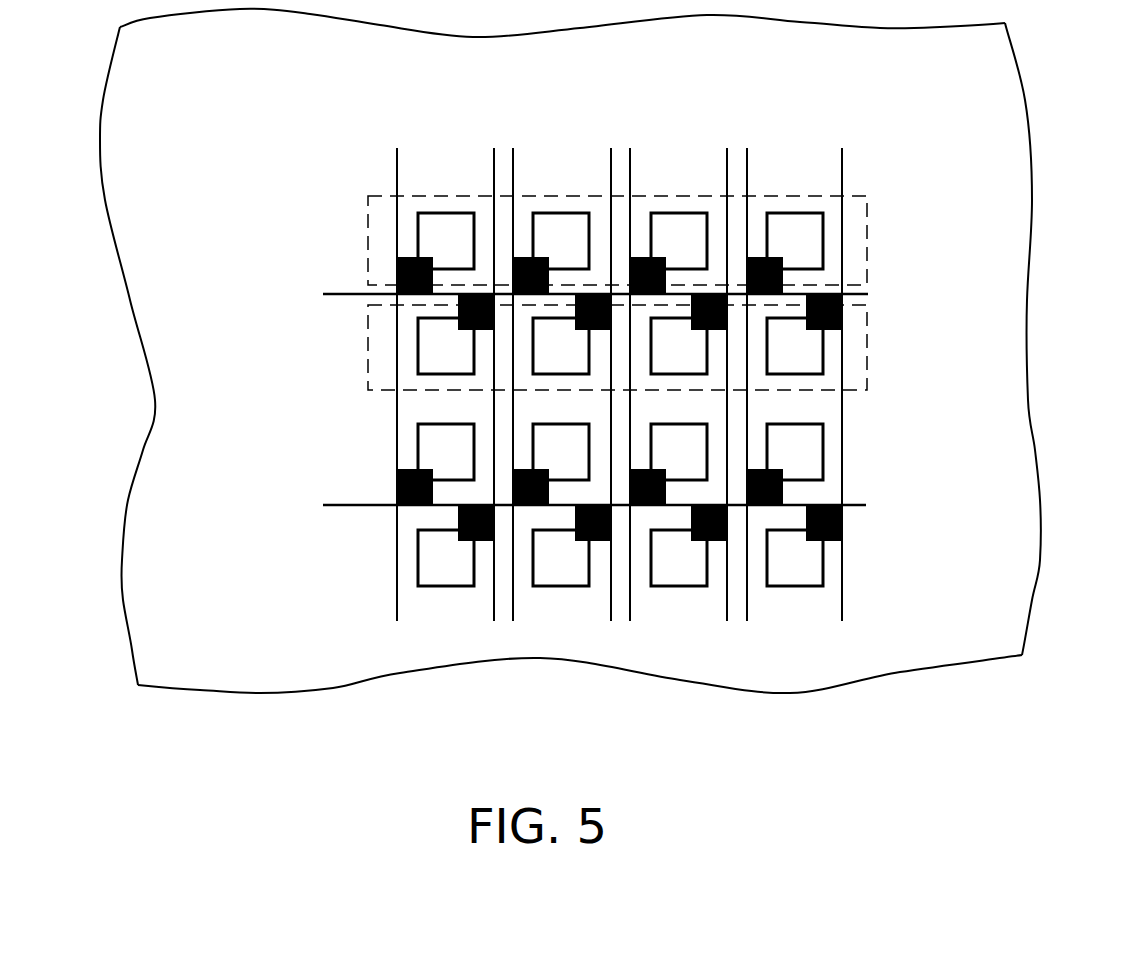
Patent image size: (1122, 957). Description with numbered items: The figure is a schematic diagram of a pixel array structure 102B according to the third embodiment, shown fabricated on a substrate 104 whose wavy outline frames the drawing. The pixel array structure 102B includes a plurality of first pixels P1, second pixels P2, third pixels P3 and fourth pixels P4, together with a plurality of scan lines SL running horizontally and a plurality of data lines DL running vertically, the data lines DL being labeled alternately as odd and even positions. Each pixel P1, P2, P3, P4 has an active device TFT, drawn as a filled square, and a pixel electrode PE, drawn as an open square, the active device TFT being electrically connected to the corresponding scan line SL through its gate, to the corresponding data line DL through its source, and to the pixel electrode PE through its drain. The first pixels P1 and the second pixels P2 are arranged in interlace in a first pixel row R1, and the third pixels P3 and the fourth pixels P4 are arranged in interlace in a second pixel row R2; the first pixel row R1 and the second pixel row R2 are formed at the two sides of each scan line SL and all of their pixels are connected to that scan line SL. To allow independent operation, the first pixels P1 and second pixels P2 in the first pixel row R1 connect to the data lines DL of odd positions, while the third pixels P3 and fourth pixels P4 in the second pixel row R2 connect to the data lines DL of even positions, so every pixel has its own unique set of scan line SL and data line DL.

The substrate 104 is at (1067, 86).
The pixel array structure 102B is at (897, 641).
The data line DL is at (619, 340).
The scan line SL is at (579, 401).
The first pixel row R1 is at (918, 241).
The second pixel row R2 is at (918, 347).
The pixel electrode PE is at (283, 420).
The active device TFT is at (275, 552).
The first pixel P1 is at (235, 472).
The second pixel P2 is at (958, 490).
The third pixel P3 is at (235, 605).
The fourth pixel P4 is at (958, 590).